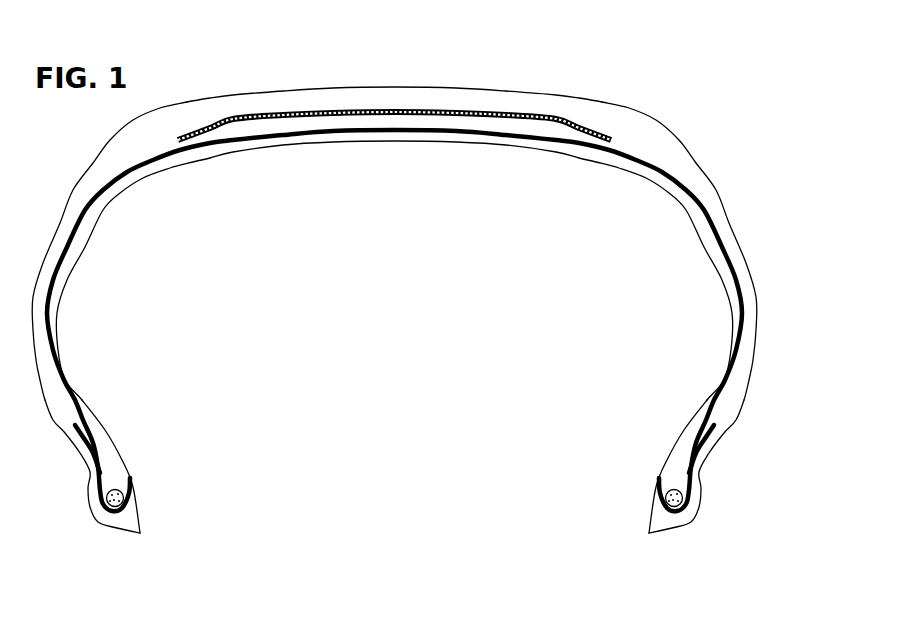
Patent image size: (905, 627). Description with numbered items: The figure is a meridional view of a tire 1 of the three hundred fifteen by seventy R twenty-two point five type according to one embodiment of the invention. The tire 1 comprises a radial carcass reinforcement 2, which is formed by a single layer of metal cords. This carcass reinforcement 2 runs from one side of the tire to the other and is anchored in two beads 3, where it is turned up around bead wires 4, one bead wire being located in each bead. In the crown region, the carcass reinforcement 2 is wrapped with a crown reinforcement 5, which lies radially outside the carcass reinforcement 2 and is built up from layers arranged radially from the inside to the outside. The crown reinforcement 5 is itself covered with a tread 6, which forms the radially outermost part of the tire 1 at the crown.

The tire 1 is at (628, 57).
The radial carcass reinforcement 2 is at (52, 328).
The beads 3 is at (131, 522).
The bead wires 4 is at (124, 490).
The crown reinforcement 5 is at (238, 124).
The tread 6 is at (332, 88).